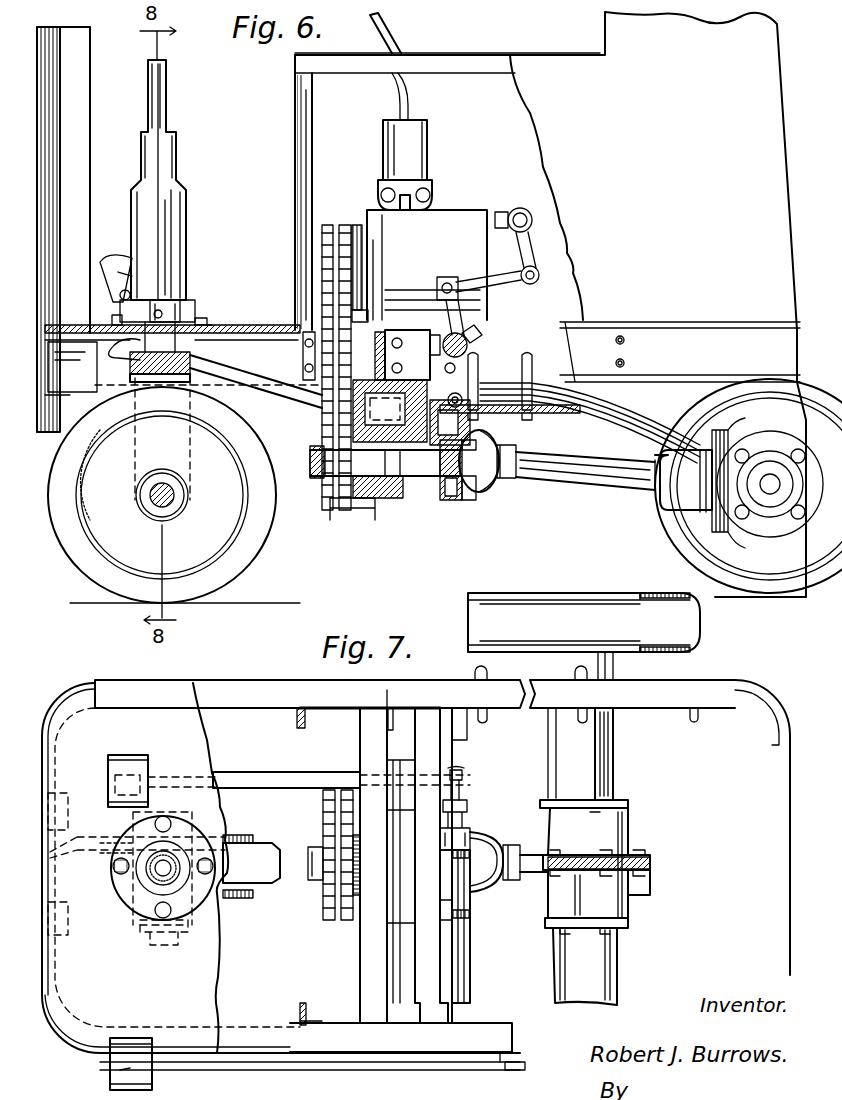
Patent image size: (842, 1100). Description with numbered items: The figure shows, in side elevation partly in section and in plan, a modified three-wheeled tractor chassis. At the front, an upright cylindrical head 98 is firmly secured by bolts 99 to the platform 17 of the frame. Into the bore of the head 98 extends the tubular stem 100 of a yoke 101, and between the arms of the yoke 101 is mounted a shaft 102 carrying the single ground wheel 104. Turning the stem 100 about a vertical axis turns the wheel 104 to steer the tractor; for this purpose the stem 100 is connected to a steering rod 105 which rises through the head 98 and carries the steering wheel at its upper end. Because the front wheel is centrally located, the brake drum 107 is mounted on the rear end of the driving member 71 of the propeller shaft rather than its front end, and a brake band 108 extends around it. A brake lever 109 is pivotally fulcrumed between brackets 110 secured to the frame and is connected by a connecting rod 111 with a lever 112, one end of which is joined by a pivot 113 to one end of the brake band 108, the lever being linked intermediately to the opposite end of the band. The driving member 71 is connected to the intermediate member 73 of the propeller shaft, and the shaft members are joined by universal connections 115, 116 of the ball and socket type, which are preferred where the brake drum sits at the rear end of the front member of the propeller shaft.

In FIG. 6, the platform 17 is at (255, 330).
In FIG. 7, the platform 17 is at (217, 736).
In FIG. 6, the driving member of the propeller shaft 71 is at (378, 498).
In FIG. 6, the intermediate member of the propeller shaft 73 is at (606, 480).
In FIG. 7, the intermediate member of the propeller shaft 73 is at (532, 873).
In FIG. 6, the upright cylindrical head 98 is at (186, 194).
In FIG. 7, the upright cylindrical head 98 is at (145, 850).
In FIG. 6, the bolts 99 is at (112, 318).
In FIG. 7, the bolts 99 is at (172, 825).
In FIG. 6, the tubular stem 100 is at (182, 306).
In FIG. 6, the yoke 101 is at (190, 356).
In FIG. 7, the yoke 101 is at (150, 912).
In FIG. 6, the shaft 102 is at (152, 503).
In FIG. 6, the ground wheel 104 is at (230, 550).
In FIG. 7, the ground wheel 104 is at (238, 898).
In FIG. 7, the steering rod 105 is at (138, 900).
In FIG. 6, the brake drum 107 is at (435, 508).
In FIG. 7, the brake drum 107 is at (334, 855).
In FIG. 6, the brake band 108 is at (455, 500).
In FIG. 7, the brake band 108 is at (470, 912).
In FIG. 6, the brake lever 109 is at (208, 427).
In FIG. 7, the brake lever 109 is at (268, 772).
In FIG. 7, the brackets 110 is at (368, 760).
In FIG. 6, the connecting rod 111 is at (465, 398).
In FIG. 7, the connecting rod 111 is at (462, 774).
In FIG. 7, the lever 112 is at (462, 793).
In FIG. 7, the pivot 113 is at (470, 818).
In FIG. 6, the universal connection 115 is at (492, 482).
In FIG. 7, the universal connection 115 is at (492, 846).
In FIG. 6, the universal connection 116 is at (680, 503).
In FIG. 7, the universal connection 116 is at (584, 799).